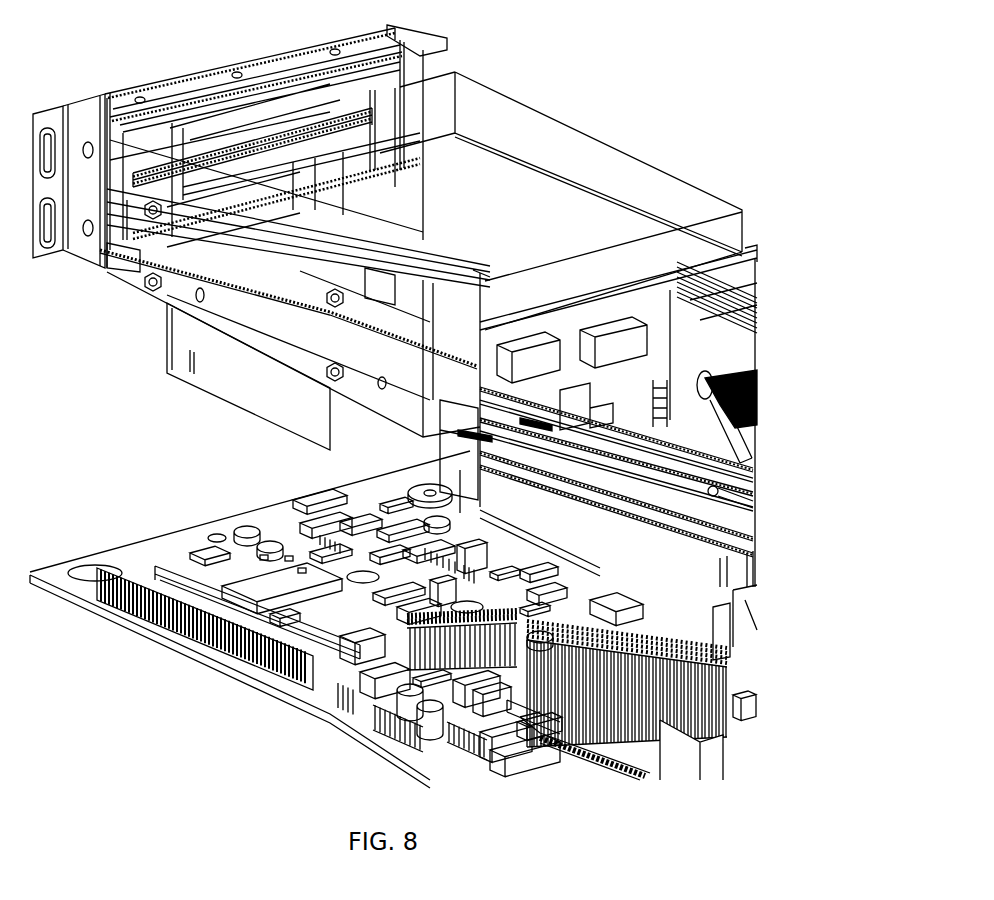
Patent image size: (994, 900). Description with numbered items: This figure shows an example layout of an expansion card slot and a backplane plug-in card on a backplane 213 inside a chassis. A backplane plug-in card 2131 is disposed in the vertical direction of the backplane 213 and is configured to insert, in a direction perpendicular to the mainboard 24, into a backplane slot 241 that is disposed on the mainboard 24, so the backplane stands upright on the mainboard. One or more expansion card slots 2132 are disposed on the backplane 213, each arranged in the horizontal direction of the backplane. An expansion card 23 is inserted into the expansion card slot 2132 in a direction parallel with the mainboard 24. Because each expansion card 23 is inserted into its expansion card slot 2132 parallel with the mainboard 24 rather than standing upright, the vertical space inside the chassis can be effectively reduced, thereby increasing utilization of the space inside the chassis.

The expansion card slot 2132 is at (310, 130).
The expansion card 23 is at (565, 187).
The backplane 213 is at (95, 273).
The backplane plug-in card 2131 is at (210, 382).
The backplane slot 241 is at (182, 570).
The mainboard 24 is at (130, 632).